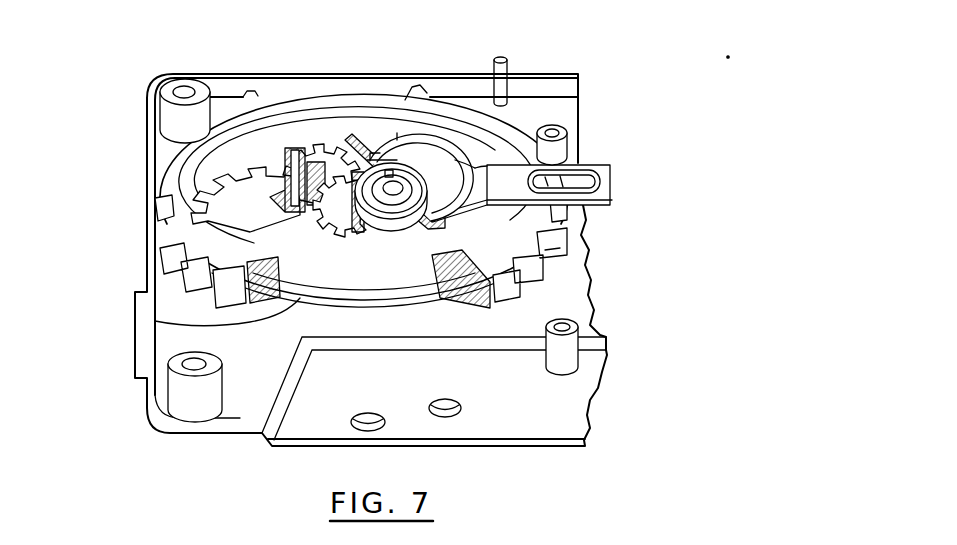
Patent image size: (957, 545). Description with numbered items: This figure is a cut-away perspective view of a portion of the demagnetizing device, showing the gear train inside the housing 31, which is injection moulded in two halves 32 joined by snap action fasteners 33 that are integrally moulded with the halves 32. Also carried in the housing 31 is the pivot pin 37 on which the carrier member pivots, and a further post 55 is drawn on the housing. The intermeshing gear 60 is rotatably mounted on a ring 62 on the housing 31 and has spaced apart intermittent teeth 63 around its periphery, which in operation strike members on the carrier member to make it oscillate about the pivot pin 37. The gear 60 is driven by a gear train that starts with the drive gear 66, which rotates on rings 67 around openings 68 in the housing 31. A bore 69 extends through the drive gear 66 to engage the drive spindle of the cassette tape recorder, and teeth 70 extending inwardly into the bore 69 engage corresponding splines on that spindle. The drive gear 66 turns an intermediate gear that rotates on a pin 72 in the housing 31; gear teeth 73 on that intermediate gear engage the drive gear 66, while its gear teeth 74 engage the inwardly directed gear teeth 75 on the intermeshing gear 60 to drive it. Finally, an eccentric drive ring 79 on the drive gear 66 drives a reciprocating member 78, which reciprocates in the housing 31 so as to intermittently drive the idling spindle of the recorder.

The housing 31 is at (153, 133).
The halves 32 is at (175, 338).
The snap action fasteners 33 is at (180, 93).
The pivot pin 37 is at (563, 352).
The mounting post 55 is at (182, 388).
The intermeshing gear 60 is at (297, 108).
The rings 62 is at (205, 322).
The intermittent teeth 63 is at (250, 106).
The drive gear 66 is at (370, 233).
The rings 67 is at (437, 186).
The openings 68 is at (360, 176).
The bore 69 is at (406, 182).
The teeth 70 is at (393, 170).
The pin 72 is at (302, 207).
The gear teeth 73 is at (258, 158).
The gear teeth 74 is at (190, 240).
The inwardly directed gear teeth 75 is at (268, 192).
The reciprocating member 78 is at (460, 165).
The eccentric drive ring 79 is at (507, 178).